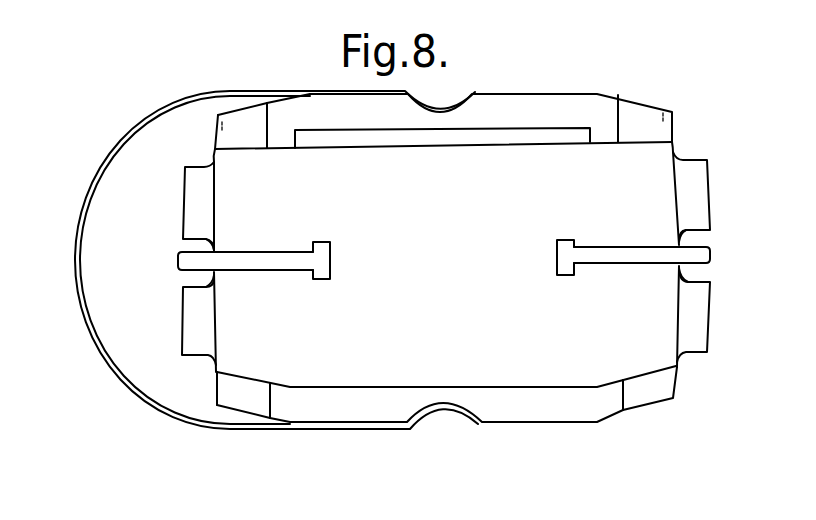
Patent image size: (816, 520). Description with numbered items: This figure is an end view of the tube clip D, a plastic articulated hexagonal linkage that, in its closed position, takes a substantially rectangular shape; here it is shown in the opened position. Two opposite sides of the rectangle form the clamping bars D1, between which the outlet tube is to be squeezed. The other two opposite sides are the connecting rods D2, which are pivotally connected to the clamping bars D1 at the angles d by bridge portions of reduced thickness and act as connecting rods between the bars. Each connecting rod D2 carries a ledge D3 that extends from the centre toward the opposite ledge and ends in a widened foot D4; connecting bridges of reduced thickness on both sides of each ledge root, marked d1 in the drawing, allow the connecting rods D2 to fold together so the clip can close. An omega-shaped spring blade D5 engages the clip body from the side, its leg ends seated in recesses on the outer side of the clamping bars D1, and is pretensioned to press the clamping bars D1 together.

The clip D is at (536, 83).
The clamping bars D1 is at (322, 114).
The connecting rods D2 is at (188, 212).
The ledges D3 is at (280, 260).
The widened foot D4 is at (323, 258).
The omega-shaped spring blade D5 is at (103, 362).
The angles d is at (213, 162).
The notch d1 is at (211, 247).